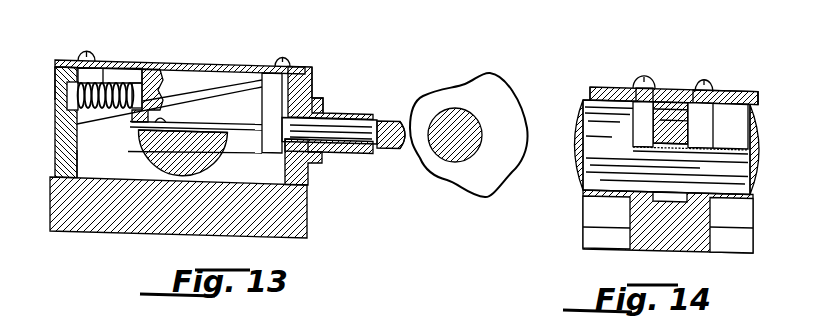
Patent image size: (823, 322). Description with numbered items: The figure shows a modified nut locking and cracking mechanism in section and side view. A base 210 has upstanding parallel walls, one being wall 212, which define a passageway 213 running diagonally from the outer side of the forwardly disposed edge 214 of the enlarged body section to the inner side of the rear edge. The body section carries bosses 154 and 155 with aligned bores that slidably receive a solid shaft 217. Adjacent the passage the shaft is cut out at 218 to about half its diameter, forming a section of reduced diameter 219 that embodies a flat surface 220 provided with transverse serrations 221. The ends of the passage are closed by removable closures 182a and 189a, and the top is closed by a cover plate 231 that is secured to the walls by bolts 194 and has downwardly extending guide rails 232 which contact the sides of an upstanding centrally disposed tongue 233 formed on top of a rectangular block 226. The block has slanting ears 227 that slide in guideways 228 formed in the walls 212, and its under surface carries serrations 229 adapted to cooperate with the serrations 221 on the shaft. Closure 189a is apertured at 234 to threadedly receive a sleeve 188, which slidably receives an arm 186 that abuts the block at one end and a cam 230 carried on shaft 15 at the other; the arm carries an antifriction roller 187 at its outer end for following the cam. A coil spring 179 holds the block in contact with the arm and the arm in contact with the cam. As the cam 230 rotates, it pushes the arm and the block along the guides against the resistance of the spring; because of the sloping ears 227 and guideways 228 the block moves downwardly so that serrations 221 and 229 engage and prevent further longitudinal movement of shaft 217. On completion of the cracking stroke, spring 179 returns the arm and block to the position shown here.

In FIG. 13, the shaft 15 is at (452, 155).
In FIG. 14, the boss 154 is at (590, 88).
In FIG. 14, the boss 155 is at (760, 98).
In FIG. 13, the coil spring 179 is at (68, 105).
In FIG. 13, the removable closure 182a is at (65, 77).
In FIG. 13, the arm 186 is at (334, 147).
In FIG. 13, the antifriction roller 187 is at (398, 150).
In FIG. 13, the sleeve 188 is at (376, 121).
In FIG. 13, the removable closure 189a is at (313, 85).
In FIG. 13, the bolts 194 is at (80, 53).
In FIG. 14, the bolts 194 is at (643, 77).
In FIG. 13, the base 210 is at (307, 215).
In FIG. 14, the base 210 is at (630, 237).
In FIG. 13, the wall 212 is at (85, 148).
In FIG. 13, the passageway 213 is at (90, 168).
In FIG. 14, the passageway 213 is at (728, 98).
In FIG. 13, the forwardly disposed edge 214 is at (308, 180).
In FIG. 13, the solid shaft 217 is at (175, 162).
In FIG. 14, the solid shaft 217 is at (602, 171).
In FIG. 14, the cut-out 218 is at (755, 125).
In FIG. 13, the section of reduced diameter 219 is at (210, 155).
In FIG. 14, the section of reduced diameter 219 is at (722, 169).
In FIG. 13, the flat surface 220 is at (148, 139).
In FIG. 14, the flat surface 220 is at (722, 149).
In FIG. 13, the transverse serrations 221 is at (197, 130).
In FIG. 14, the transverse serrations 221 is at (642, 132).
In FIG. 13, the rectangular block 226 is at (193, 82).
In FIG. 14, the rectangular block 226 is at (692, 98).
In FIG. 13, the slanting ears 227 is at (232, 93).
In FIG. 14, the slanting ears 227 is at (628, 88).
In FIG. 13, the guideways 228 is at (307, 72).
In FIG. 13, the serrations 229 is at (138, 124).
In FIG. 14, the serrations 229 is at (725, 158).
In FIG. 13, the cam 230 is at (492, 187).
In FIG. 13, the cover plate 231 is at (128, 62).
In FIG. 14, the cover plate 231 is at (677, 88).
In FIG. 14, the guide rails 232 is at (657, 88).
In FIG. 14, the tongue 233 is at (677, 117).
In FIG. 13, the aperture 234 is at (321, 101).